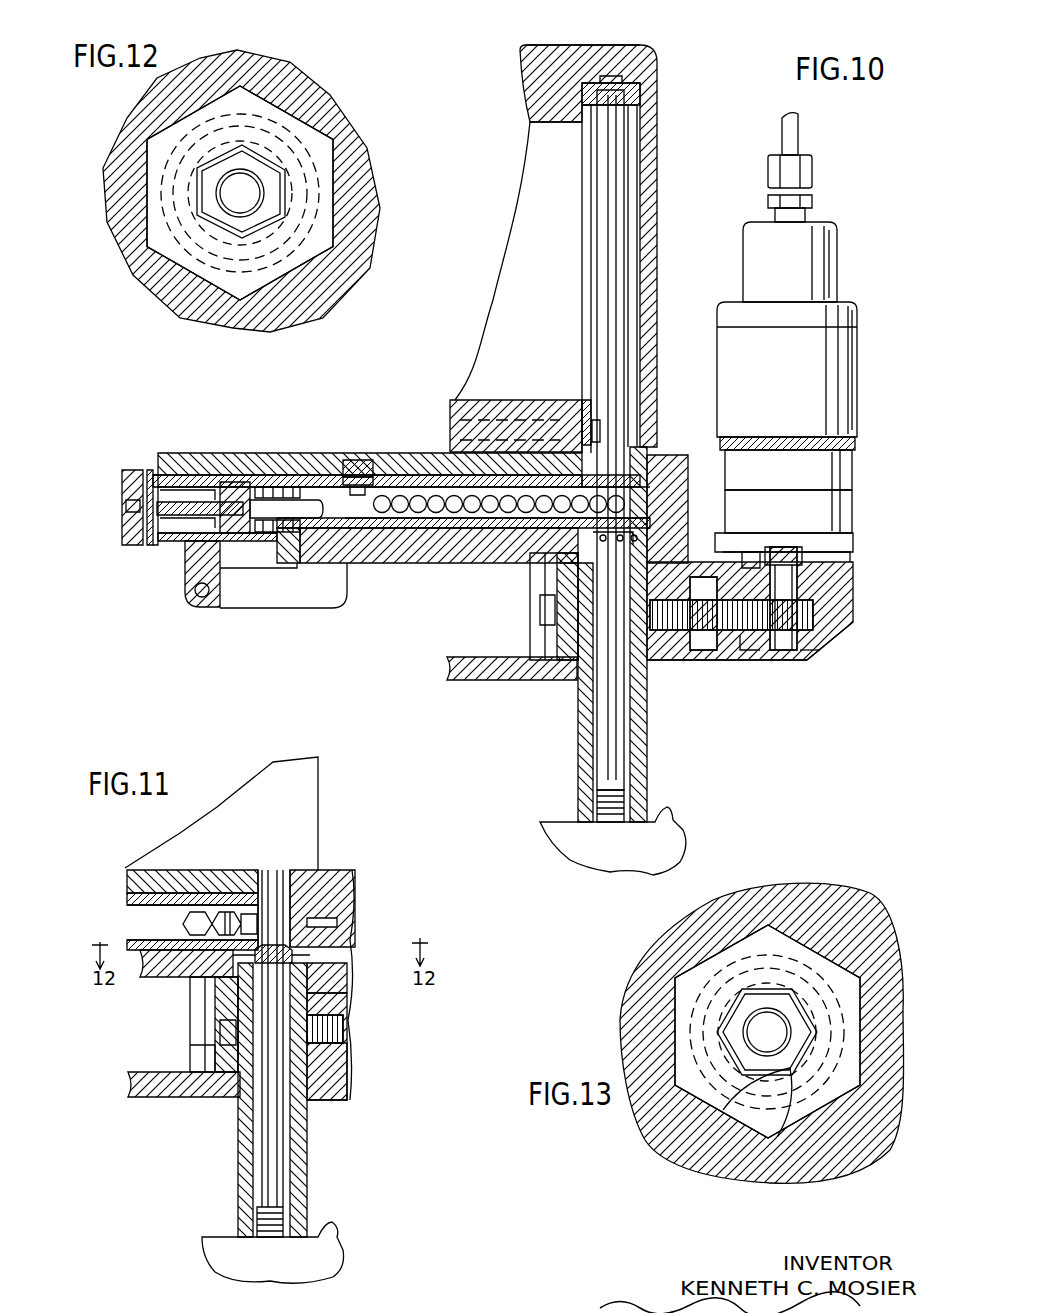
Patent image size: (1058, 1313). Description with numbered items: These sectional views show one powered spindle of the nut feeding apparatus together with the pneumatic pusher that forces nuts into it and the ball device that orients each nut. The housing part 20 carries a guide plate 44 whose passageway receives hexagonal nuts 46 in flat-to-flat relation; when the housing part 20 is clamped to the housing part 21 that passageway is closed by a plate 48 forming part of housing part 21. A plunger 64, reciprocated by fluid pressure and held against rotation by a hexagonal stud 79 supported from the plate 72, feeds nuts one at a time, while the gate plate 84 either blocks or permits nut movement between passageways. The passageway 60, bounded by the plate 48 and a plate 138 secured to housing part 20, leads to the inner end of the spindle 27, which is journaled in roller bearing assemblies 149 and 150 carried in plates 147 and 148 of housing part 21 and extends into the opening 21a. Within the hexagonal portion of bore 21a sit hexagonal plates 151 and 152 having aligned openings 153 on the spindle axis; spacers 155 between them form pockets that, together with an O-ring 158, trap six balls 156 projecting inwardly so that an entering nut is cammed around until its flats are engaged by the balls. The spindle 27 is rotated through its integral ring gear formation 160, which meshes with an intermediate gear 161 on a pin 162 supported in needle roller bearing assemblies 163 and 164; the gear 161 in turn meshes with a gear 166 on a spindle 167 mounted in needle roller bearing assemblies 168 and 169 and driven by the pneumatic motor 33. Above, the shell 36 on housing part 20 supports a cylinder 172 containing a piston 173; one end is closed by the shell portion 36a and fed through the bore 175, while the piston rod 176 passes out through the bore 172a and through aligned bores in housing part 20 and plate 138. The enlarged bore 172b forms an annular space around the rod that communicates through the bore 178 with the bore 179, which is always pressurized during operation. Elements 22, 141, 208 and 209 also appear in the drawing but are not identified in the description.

In FIG. 11, the housing part 20 is at (127, 879).
In FIG. 10, the housing part 20 is at (410, 455).
In FIG. 12, the housing part 21 is at (140, 300).
In FIG. 13, the housing part 21 is at (632, 998).
In FIG. 11, the housing part 21 is at (150, 988).
In FIG. 10, the housing part 21 is at (383, 563).
In FIG. 10, the opening 21a is at (555, 563).
In FIG. 10, the pivot pin 22 is at (196, 592).
In FIG. 11, the spindle 27 is at (308, 1160).
In FIG. 10, the spindle 27 is at (650, 750).
In FIG. 10, the pneumatic motor 33 is at (780, 393).
In FIG. 11, the shell 36 is at (318, 815).
In FIG. 10, the shell 36 is at (658, 100).
In FIG. 10, the shell portion 36a is at (553, 58).
In FIG. 10, the guide plate 44 is at (330, 486).
In FIG. 13, the hexagonal nuts 46 is at (770, 1132).
In FIG. 11, the hexagonal nuts 46 is at (236, 964).
In FIG. 11, the plate 48 is at (127, 944).
In FIG. 10, the plate 48 is at (412, 535).
In FIG. 11, the passageway 60 is at (133, 931).
In FIG. 10, the passageway 60 is at (482, 535).
In FIG. 10, the plunger 64 is at (195, 555).
In FIG. 10, the plate 72 is at (130, 496).
In FIG. 10, the stud 79 is at (195, 505).
In FIG. 10, the gate plate 84 is at (357, 462).
In FIG. 11, the plate 138 is at (127, 899).
In FIG. 10, the plate 138 is at (478, 485).
In FIG. 11, the block 141 is at (356, 897).
In FIG. 10, the block 141 is at (658, 485).
In FIG. 11, the plate 147 is at (348, 1006).
In FIG. 10, the plate 147 is at (853, 578).
In FIG. 11, the plate 148 is at (350, 1068).
In FIG. 10, the plate 148 is at (835, 652).
In FIG. 11, the roller bearing assembly 149 is at (215, 1000).
In FIG. 10, the roller bearing assembly 149 is at (575, 585).
In FIG. 11, the roller bearing assembly 150 is at (205, 1055).
In FIG. 10, the roller bearing assembly 150 is at (665, 670).
In FIG. 12, the hexagonal plate 151 is at (325, 168).
In FIG. 13, the hexagonal plate 151 is at (722, 960).
In FIG. 11, the hexagonal plate 151 is at (320, 954).
In FIG. 11, the hexagonal plate 152 is at (335, 975).
In FIG. 12, the openings 153 is at (285, 197).
In FIG. 13, the openings 153 is at (706, 1109).
In FIG. 12, the spacers 155 is at (320, 195).
In FIG. 13, the spacers 155 is at (712, 1045).
In FIG. 12, the balls 156 is at (212, 145).
In FIG. 13, the balls 156 is at (815, 1032).
In FIG. 10, the balls 156 is at (650, 580).
In FIG. 12, the O-ring 158 is at (265, 265).
In FIG. 13, the O-ring 158 is at (820, 1006).
In FIG. 11, the ring gear formation 160 is at (222, 1030).
In FIG. 10, the ring gear formation 160 is at (548, 616).
In FIG. 11, the intermediate gear 161 is at (345, 1036).
In FIG. 10, the intermediate gear 161 is at (740, 635).
In FIG. 10, the pin 162 is at (708, 660).
In FIG. 10, the needle roller bearing assembly 163 is at (745, 562).
In FIG. 10, the needle roller bearing assembly 164 is at (745, 652).
In FIG. 10, the gear 166 is at (832, 625).
In FIG. 10, the spindle 167 is at (818, 664).
In FIG. 10, the needle roller bearing assembly 168 is at (825, 560).
In FIG. 10, the needle roller bearing assembly 169 is at (790, 662).
In FIG. 10, the cylinder 172 is at (582, 290).
In FIG. 10, the bore 172a is at (590, 469).
In FIG. 10, the enlarged bore 172b is at (592, 410).
In FIG. 10, the piston 173 is at (650, 66).
In FIG. 10, the bore 175 is at (560, 77).
In FIG. 11, the piston rod 176 is at (272, 872).
In FIG. 10, the piston rod 176 is at (607, 210).
In FIG. 10, the bore 178 is at (592, 430).
In FIG. 10, the bore 179 is at (452, 404).
In FIG. 11, the base 208 is at (290, 1268).
In FIG. 10, the base 208 is at (585, 878).
In FIG. 11, the nut 209 is at (265, 1226).
In FIG. 10, the nut 209 is at (600, 800).